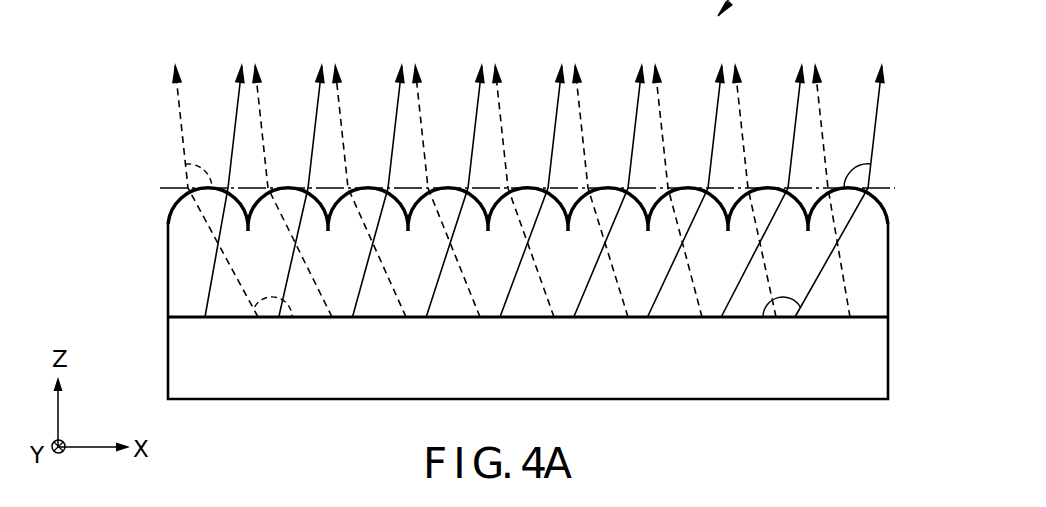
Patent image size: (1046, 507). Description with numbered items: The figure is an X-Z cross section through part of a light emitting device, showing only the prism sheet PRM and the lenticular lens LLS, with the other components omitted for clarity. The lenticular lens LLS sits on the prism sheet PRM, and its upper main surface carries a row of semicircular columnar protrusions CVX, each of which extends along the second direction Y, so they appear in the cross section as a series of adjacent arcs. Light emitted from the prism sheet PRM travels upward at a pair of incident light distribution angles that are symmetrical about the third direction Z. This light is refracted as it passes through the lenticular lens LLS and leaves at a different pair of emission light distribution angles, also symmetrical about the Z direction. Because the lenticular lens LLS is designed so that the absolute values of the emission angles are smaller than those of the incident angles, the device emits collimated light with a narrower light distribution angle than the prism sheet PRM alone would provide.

The protrusions CVX is at (175, 219).
The lenticular lens LLS is at (175, 288).
The prism sheet PRM is at (175, 360).